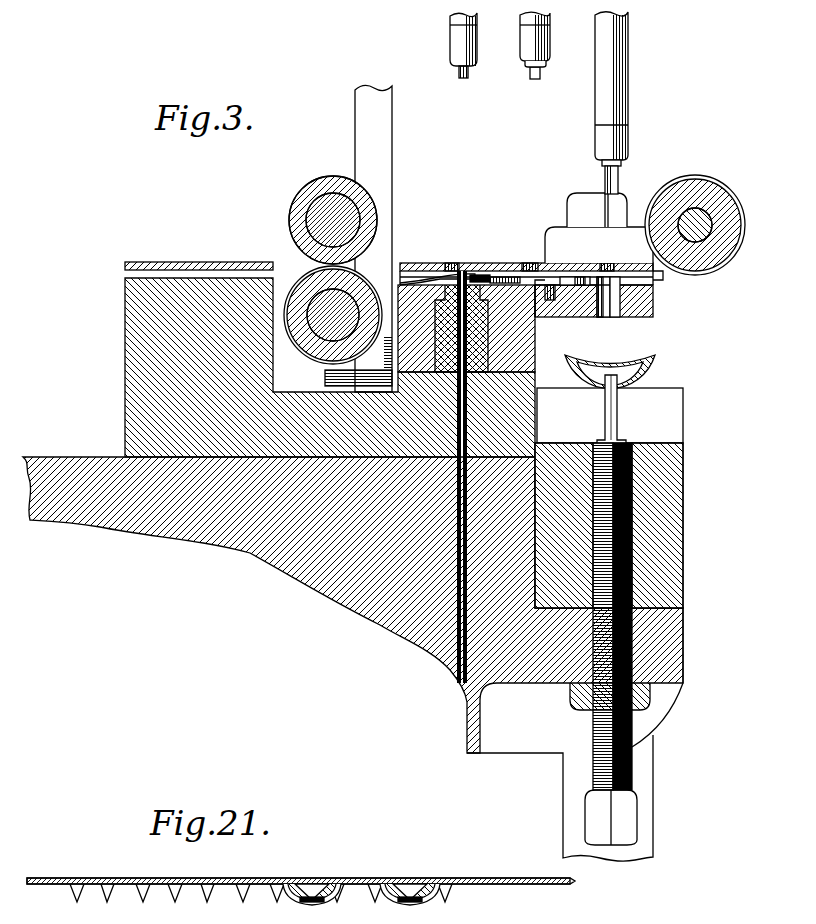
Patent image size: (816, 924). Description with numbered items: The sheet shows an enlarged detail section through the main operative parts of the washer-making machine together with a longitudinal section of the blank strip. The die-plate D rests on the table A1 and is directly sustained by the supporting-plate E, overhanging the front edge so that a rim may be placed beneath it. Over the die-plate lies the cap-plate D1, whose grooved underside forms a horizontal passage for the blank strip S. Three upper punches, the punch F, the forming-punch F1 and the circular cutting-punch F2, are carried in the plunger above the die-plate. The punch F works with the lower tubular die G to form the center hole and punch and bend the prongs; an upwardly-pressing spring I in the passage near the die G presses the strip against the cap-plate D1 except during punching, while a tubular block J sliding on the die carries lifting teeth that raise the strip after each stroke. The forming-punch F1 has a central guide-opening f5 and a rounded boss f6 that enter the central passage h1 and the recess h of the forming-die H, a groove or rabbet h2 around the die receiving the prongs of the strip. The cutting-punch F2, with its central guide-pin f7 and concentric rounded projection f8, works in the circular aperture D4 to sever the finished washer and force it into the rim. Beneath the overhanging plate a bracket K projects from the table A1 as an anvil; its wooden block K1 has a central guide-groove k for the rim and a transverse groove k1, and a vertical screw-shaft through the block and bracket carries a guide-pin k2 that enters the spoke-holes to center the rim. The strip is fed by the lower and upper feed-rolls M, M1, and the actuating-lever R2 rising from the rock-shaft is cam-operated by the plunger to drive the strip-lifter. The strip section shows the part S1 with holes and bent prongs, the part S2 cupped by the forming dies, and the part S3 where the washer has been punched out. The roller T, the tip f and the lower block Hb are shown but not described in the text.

In FIG. 3, the actuating-lever R2 is at (372, 238).
In FIG. 3, the cap-plate D1 is at (205, 252).
In FIG. 3, the supporting-plate E is at (125, 390).
In FIG. 3, the upwardly-pressing spring I is at (428, 272).
In FIG. 3, the die-plate D is at (530, 318).
In FIG. 3, the tubular die G is at (470, 275).
In FIG. 3, the forming-die H is at (522, 277).
In FIG. 3, the aperture D4 is at (620, 305).
In FIG. 3, the central passage h1 is at (598, 300).
In FIG. 3, the recess h is at (537, 283).
In FIG. 3, the groove or rabbet h2 is at (556, 285).
In FIG. 3, the roller T is at (712, 185).
In FIG. 3, the tubular block J is at (482, 346).
In FIG. 3, the table A1 is at (353, 590).
In FIG. 3, the lower guide block Hb is at (678, 636).
In FIG. 3, the transverse groove k1 is at (610, 415).
In FIG. 3, the central guide-groove k is at (632, 398).
In FIG. 3, the guide-pin k2 is at (618, 420).
In FIG. 3, the wooden block K1 is at (670, 510).
In FIG. 3, the bracket K is at (612, 580).
In FIG. 3, the upper feed-roll M1 is at (310, 200).
In FIG. 3, the lower feed-roll M is at (300, 275).
In FIG. 3, the punch F is at (450, 45).
In FIG. 3, the spindle tip f is at (460, 78).
In FIG. 3, the forming-punch F1 is at (548, 33).
In FIG. 3, the central guide-opening f5 is at (533, 79).
In FIG. 3, the rounded projection or boss f6 is at (546, 66).
In FIG. 3, the circular cutting-punch F2 is at (628, 40).
In FIG. 3, the concentric rounded projection f8 is at (602, 163).
In FIG. 3, the central guide-pin f7 is at (618, 178).
In FIG. 21, the part of the strip S1 is at (148, 878).
In FIG. 21, the part of the strip S2 is at (210, 892).
In FIG. 21, the blank strip S is at (361, 903).
In FIG. 21, the part of the blank S3 is at (320, 880).